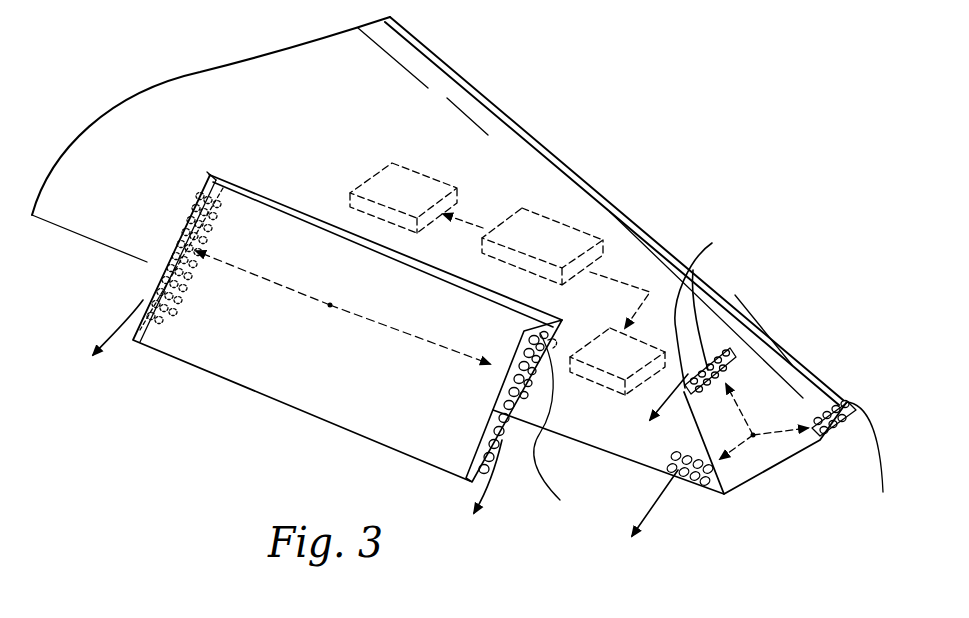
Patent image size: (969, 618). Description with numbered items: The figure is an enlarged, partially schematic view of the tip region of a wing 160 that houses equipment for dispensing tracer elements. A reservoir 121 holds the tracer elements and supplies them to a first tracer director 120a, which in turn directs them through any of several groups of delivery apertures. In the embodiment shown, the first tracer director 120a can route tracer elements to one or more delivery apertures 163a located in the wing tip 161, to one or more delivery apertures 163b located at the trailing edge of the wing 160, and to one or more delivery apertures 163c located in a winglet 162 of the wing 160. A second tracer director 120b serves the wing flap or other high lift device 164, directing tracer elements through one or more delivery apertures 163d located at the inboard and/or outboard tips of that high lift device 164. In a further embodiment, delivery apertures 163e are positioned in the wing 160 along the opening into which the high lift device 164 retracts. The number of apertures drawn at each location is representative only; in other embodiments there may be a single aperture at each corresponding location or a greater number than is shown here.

The first tracer director 120a is at (663, 355).
The second tracer director 120b is at (418, 172).
The reservoir 121 is at (582, 232).
The wing 160 is at (500, 167).
The wing tip 161 is at (822, 445).
The winglet 162 is at (755, 400).
The delivery apertures 163a is at (845, 428).
The delivery apertures 163b is at (687, 485).
The delivery apertures 163c is at (704, 323).
The delivery apertures 163d is at (505, 427).
The delivery apertures 163e is at (207, 178).
The high lift device 164 is at (300, 362).